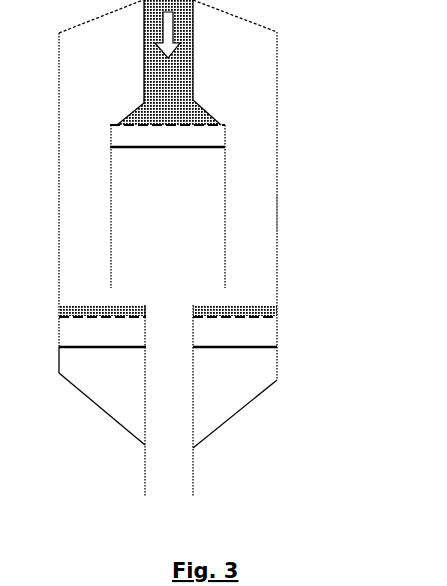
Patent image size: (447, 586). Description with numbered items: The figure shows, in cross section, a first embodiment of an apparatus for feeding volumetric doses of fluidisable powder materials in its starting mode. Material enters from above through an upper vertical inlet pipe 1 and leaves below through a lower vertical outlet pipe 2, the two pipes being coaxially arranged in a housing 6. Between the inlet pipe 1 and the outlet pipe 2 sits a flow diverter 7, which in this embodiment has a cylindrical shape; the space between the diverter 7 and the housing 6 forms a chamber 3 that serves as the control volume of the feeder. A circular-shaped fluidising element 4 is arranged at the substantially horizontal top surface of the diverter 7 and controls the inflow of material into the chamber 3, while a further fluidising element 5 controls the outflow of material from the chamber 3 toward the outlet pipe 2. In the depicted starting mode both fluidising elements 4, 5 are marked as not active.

The upper vertical inlet pipe 1 is at (196, 57).
The housing 6 is at (280, 97).
The fluidising element 4 is at (211, 137).
The flow diverter 7 is at (228, 195).
The chamber 3 is at (260, 255).
The fluidising element 5 is at (281, 330).
The lower vertical outlet pipe 2 is at (196, 476).